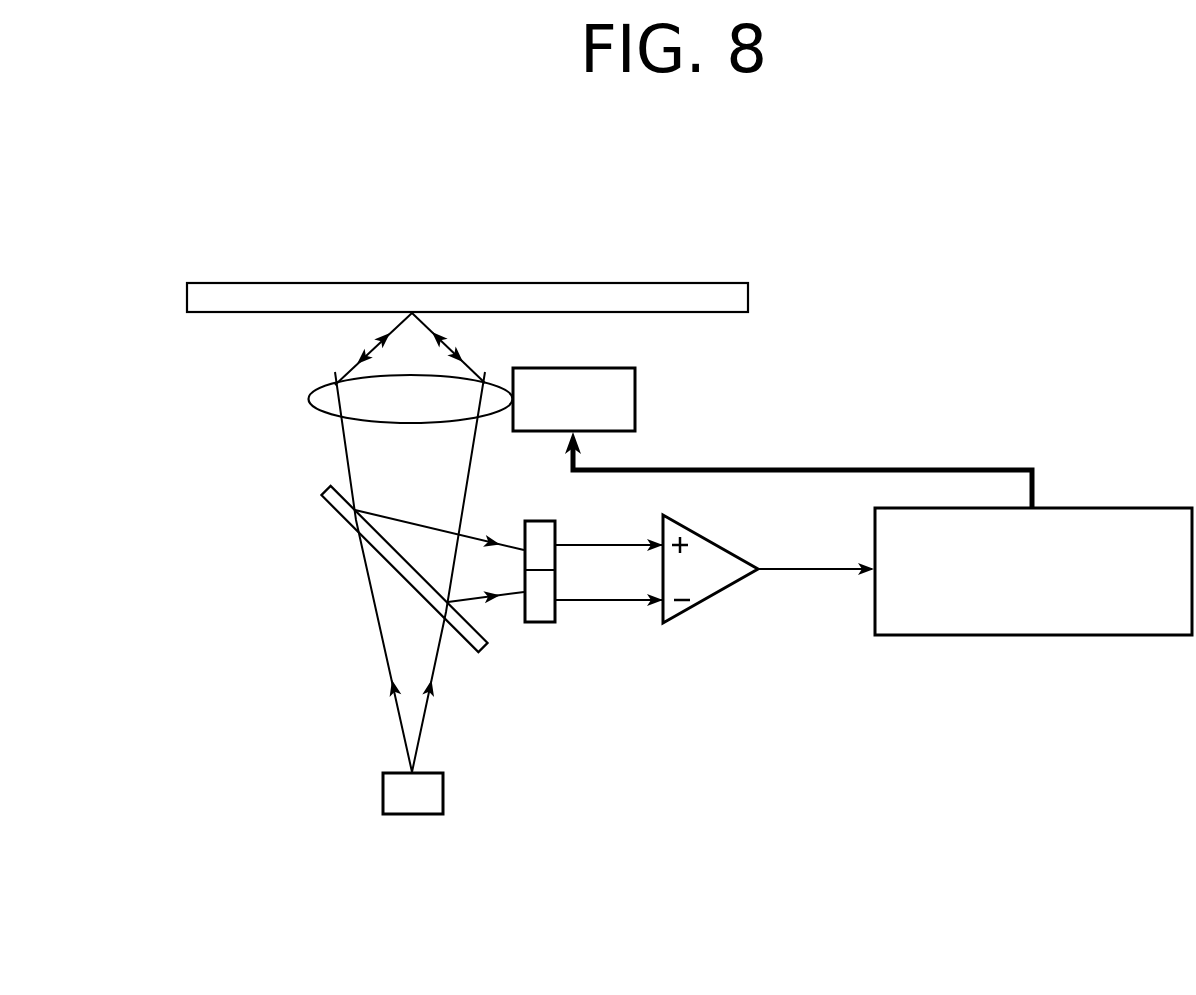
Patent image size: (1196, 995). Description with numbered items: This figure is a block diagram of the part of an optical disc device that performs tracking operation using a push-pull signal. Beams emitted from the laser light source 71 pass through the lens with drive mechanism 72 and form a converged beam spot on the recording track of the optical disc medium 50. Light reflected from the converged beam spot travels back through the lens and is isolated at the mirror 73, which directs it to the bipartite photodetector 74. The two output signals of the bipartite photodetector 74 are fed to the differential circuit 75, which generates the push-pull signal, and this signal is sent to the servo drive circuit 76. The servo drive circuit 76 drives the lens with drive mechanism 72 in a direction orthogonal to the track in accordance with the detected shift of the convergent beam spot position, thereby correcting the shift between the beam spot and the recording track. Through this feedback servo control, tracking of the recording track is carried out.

The optical disc medium 50 is at (732, 302).
The laser light source 71 is at (437, 790).
The lens with drive mechanism 72 is at (610, 415).
The mirror 73 is at (330, 498).
The bipartite photodetector 74 is at (543, 610).
The differential circuit 75 is at (720, 595).
The servo drive circuit 76 is at (1127, 637).